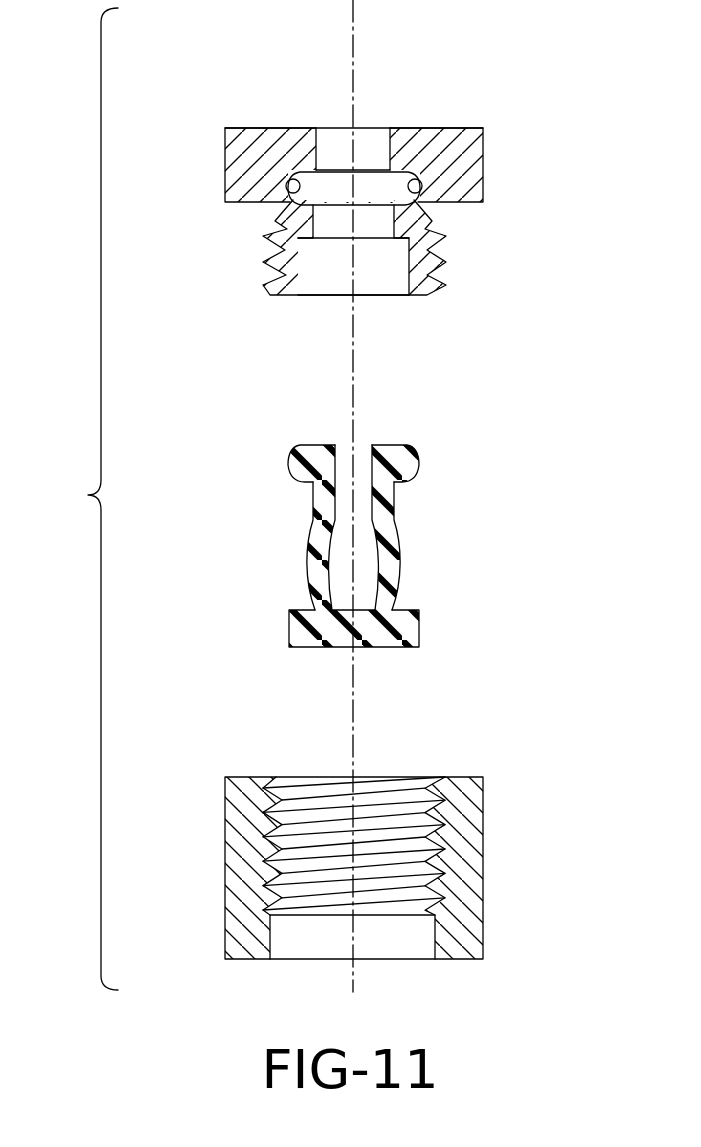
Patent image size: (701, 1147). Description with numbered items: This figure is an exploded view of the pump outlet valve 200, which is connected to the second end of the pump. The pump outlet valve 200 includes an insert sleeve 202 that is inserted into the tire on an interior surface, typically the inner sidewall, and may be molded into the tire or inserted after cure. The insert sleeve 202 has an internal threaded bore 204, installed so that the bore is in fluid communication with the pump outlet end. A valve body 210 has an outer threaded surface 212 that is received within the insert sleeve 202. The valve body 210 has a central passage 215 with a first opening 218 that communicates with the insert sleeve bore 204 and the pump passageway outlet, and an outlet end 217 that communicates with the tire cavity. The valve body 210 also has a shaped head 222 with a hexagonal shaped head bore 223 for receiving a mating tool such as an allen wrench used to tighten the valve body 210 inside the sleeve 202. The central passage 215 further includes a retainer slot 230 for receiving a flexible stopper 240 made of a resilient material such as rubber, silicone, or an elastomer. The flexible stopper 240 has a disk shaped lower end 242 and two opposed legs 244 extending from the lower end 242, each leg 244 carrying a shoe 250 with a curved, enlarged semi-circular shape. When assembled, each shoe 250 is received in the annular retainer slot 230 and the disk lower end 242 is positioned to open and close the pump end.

The pump outlet valve 200 is at (86, 495).
The insert sleeve 202 is at (384, 834).
The internal threaded bore 204 is at (282, 822).
The valve body 210 is at (385, 116).
The outer threaded surface 212 is at (379, 281).
The central passage 215 is at (378, 272).
The outlet end 217 is at (370, 150).
The first opening 218 is at (298, 276).
The shaped head 222 is at (447, 128).
The hexagonal shaped head bore 223 is at (318, 150).
The retainer slot 230 is at (292, 196).
The flexible stopper 240 is at (341, 535).
The disk shaped lower end 242 is at (382, 627).
The legs 244 is at (400, 553).
The shoe 250 is at (313, 460).